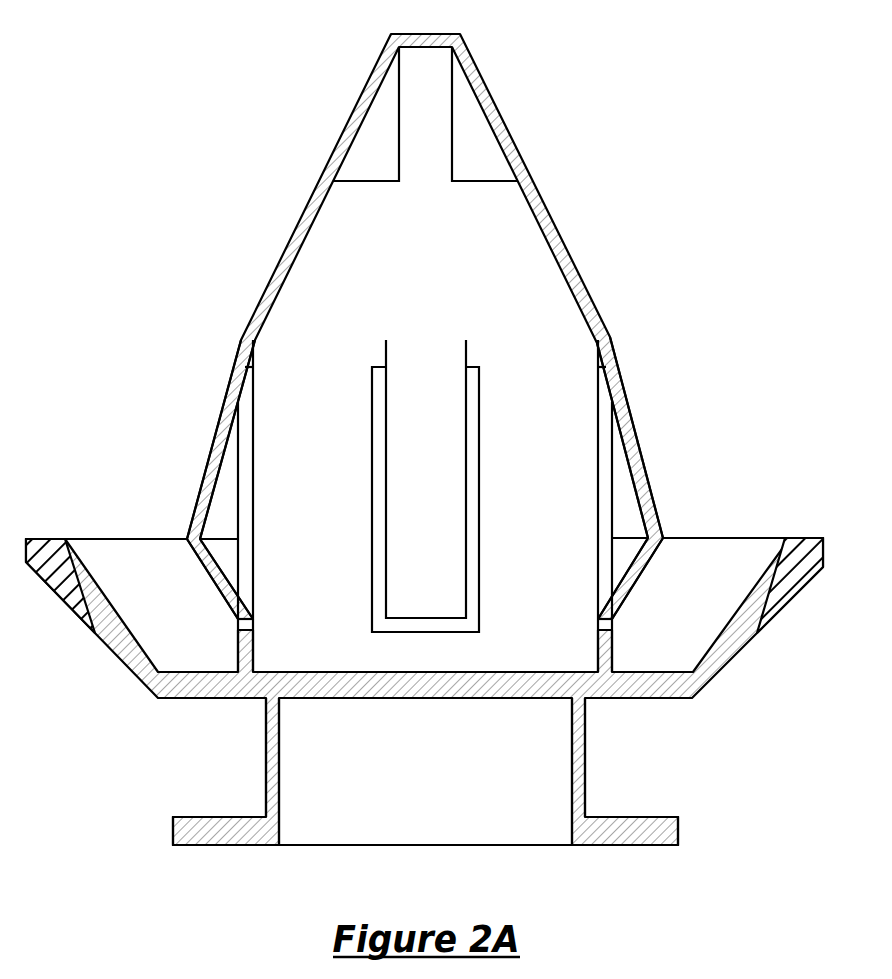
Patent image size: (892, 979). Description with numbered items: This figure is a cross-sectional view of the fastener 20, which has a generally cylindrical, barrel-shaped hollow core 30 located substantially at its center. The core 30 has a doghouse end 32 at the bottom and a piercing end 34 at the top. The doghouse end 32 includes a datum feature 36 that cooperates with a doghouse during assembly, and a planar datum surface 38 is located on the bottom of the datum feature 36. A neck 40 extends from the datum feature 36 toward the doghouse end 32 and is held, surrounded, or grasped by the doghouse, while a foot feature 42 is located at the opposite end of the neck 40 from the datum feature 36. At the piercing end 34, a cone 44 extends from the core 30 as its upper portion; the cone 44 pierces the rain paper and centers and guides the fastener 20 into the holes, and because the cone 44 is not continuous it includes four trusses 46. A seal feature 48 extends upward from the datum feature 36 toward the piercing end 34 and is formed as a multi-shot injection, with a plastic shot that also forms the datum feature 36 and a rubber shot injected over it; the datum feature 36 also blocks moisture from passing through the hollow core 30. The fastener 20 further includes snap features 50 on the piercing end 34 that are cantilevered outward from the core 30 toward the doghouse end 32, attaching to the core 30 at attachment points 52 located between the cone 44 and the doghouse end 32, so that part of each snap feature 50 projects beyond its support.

The fastener 20 is at (688, 92).
The core 30 is at (605, 426).
The doghouse end 32 is at (66, 797).
The piercing end 34 is at (140, 127).
The datum feature 36 is at (665, 675).
The planar datum surface 38 is at (193, 700).
The neck 40 is at (580, 763).
The foot feature 42 is at (193, 837).
The cone 44 is at (332, 220).
The trusses 46 is at (347, 137).
The seal feature 48 is at (63, 567).
The snap features 50 is at (218, 418).
The attachment points 52 is at (247, 338).